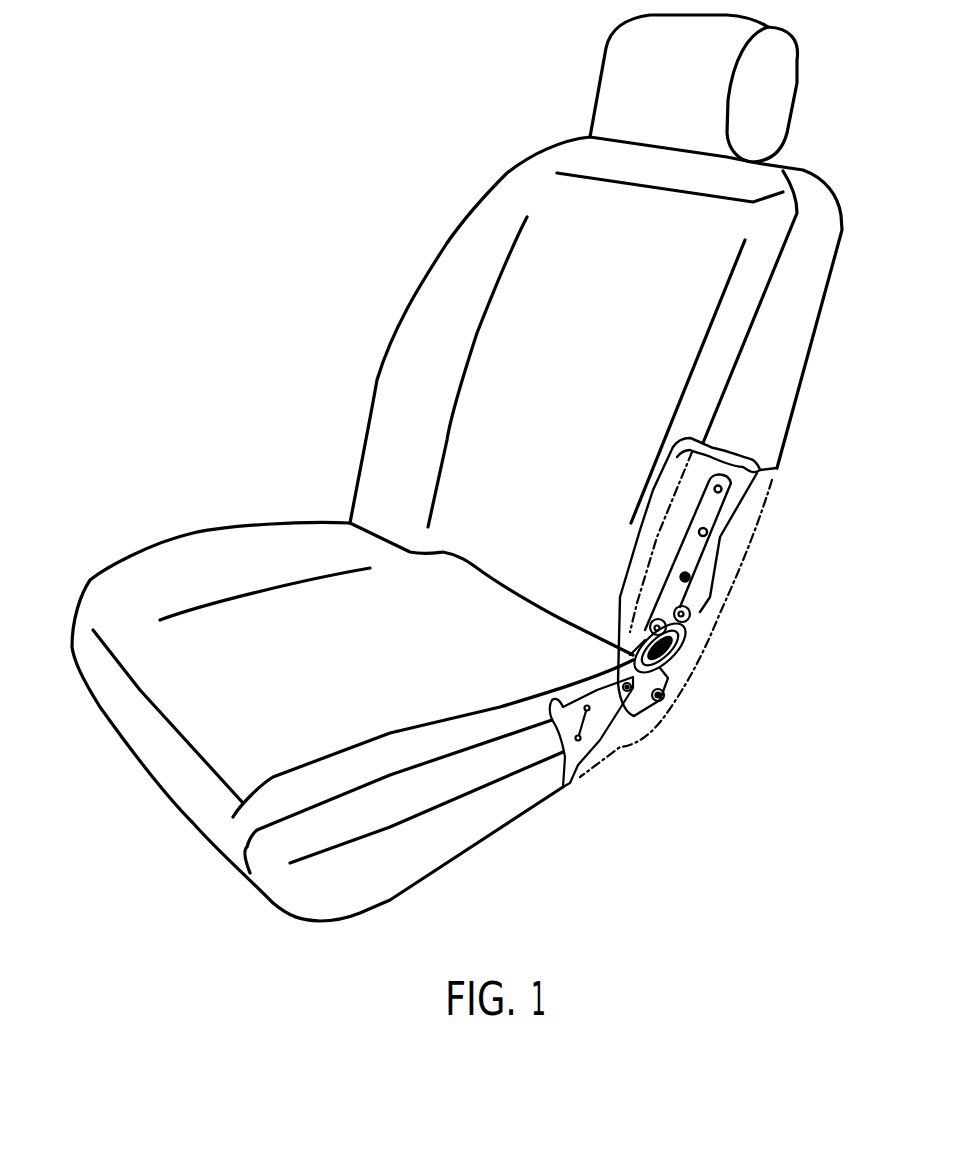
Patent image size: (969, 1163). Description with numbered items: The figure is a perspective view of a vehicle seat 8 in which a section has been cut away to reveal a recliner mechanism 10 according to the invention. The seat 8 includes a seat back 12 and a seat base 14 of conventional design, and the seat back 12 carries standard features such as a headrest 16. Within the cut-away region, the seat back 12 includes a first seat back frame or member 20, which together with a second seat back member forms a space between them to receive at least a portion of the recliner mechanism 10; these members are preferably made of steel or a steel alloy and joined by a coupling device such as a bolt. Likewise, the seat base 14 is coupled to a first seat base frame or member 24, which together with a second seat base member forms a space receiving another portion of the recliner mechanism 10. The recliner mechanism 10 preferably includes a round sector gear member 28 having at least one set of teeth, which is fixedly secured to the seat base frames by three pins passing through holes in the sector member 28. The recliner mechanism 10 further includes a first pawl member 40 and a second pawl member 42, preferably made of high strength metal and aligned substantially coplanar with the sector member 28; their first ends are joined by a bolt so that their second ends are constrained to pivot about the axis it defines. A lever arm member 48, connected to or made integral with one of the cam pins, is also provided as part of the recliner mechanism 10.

The vehicle seat 8 is at (307, 223).
The recliner mechanism 10 is at (716, 637).
The seat back 12 is at (453, 248).
The seat base 14 is at (185, 545).
The headrest 16 is at (597, 80).
The first seat back frame or member 20 is at (700, 548).
The first seat base frame or member 24 is at (628, 715).
The sector gear member 28 is at (670, 683).
The first pawl assembly or member 40 is at (634, 652).
The second pawl assembly or member 42 is at (692, 632).
The lever arm member 48 is at (700, 607).